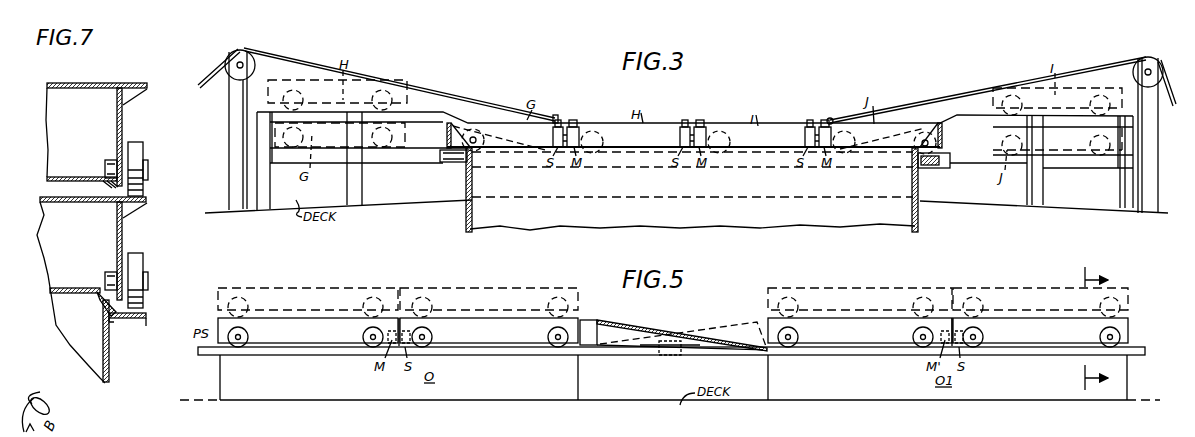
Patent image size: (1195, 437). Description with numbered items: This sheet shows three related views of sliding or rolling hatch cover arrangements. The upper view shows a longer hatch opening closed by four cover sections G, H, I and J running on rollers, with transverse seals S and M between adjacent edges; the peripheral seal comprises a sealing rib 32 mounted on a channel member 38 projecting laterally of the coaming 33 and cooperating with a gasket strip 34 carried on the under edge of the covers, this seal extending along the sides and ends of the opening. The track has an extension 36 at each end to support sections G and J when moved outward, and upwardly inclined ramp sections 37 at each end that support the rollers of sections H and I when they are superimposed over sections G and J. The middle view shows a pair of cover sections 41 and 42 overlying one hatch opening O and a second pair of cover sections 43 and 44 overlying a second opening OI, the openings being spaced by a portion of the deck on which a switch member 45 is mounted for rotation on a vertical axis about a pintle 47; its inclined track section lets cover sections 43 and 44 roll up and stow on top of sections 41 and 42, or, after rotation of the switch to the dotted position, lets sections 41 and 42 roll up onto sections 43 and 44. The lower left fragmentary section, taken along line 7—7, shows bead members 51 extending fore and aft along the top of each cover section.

In FIG. 3, the sealing rib 32 is at (943, 148).
In FIG. 3, the coaming 33 is at (920, 213).
In FIG. 3, the gasket strip 34 is at (447, 145).
In FIG. 3, the extension 36 is at (400, 153).
In FIG. 3, the upwardly inclined ramp section 37 is at (458, 118).
In FIG. 3, the channel member 38 is at (932, 163).
In FIG. 5, the cover section 41 is at (302, 333).
In FIG. 7, the cover section 42 is at (86, 83).
In FIG. 5, the cover section 42 is at (486, 333).
In FIG. 5, the cover section 43 is at (308, 300).
In FIG. 7, the cover section 44 is at (50, 251).
In FIG. 5, the cover section 44 is at (485, 300).
In FIG. 5, the switch member 45 is at (694, 327).
In FIG. 5, the pintle 47 is at (673, 360).
In FIG. 7, the bead member 51 is at (116, 194).
In FIG. 5, the section line 7 is at (1089, 329).